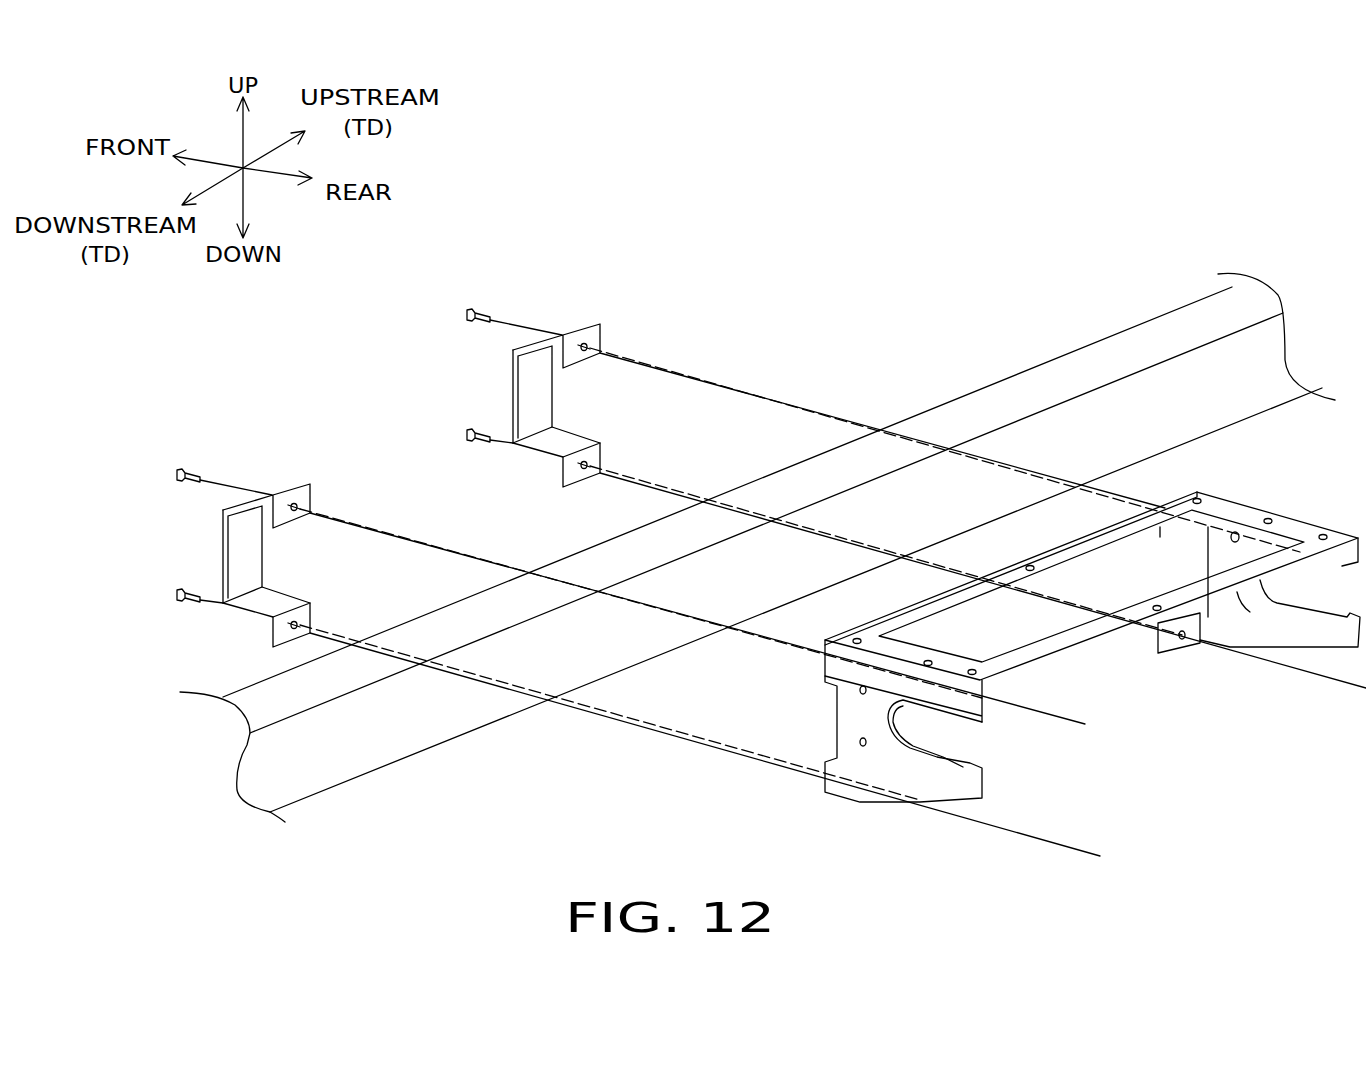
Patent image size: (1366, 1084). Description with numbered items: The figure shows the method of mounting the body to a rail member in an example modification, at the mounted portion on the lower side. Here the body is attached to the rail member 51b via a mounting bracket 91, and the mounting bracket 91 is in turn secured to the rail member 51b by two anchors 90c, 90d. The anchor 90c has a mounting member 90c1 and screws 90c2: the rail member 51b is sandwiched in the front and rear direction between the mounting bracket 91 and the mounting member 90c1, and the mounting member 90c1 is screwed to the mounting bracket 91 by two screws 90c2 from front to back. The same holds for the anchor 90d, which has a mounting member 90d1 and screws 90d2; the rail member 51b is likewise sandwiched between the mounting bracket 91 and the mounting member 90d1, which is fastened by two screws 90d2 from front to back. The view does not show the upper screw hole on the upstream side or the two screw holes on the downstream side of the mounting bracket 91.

The rail member 51b is at (1077, 373).
The anchor 90c is at (561, 332).
The mounting member 90c1 is at (603, 327).
The screws 90c2 is at (466, 277).
The anchor 90d is at (271, 493).
The mounting member 90d1 is at (313, 487).
The screws 90d2 is at (176, 440).
The mounting bracket 91 is at (1079, 645).